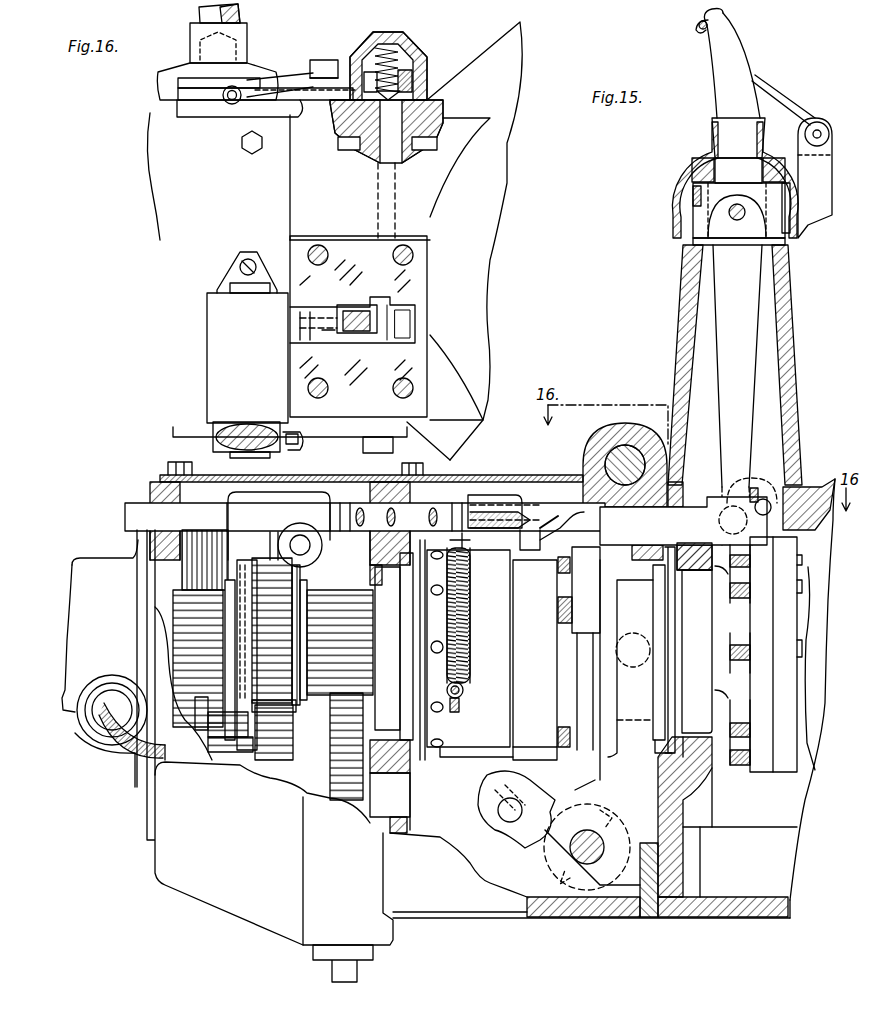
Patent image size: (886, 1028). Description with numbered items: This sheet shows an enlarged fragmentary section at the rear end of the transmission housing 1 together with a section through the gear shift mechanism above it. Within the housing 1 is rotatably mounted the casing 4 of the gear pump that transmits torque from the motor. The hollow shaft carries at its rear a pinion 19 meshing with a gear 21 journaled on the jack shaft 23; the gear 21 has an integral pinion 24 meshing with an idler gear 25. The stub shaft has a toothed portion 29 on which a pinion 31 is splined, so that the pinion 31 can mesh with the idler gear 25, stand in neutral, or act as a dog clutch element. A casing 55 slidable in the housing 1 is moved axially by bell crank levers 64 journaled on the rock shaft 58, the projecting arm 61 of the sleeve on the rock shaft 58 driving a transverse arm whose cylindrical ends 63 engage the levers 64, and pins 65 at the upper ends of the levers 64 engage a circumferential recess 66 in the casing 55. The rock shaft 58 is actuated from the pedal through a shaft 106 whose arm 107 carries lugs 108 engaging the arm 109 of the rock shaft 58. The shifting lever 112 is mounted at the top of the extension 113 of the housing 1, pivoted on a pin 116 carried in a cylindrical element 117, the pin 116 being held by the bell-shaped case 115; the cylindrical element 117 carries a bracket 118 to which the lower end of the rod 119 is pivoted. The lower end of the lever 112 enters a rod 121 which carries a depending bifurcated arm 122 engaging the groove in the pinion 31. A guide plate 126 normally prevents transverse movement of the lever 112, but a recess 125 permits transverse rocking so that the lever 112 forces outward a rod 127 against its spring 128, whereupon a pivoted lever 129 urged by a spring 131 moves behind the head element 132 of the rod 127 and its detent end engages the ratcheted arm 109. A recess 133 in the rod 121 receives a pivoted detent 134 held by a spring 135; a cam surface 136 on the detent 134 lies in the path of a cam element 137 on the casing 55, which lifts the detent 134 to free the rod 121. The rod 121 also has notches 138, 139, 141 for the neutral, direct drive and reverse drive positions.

In FIG. 16, the housing 1 is at (180, 218).
In FIG. 15, the housing 1 is at (630, 900).
In FIG. 15, the casing 4 is at (778, 775).
In FIG. 15, the pinion 19 is at (345, 598).
In FIG. 15, the gear 21 is at (348, 790).
In FIG. 15, the jack shaft 23 is at (405, 797).
In FIG. 15, the pinion 24 is at (232, 756).
In FIG. 15, the idler gear 25 is at (213, 725).
In FIG. 15, the toothed portion 29 is at (196, 600).
In FIG. 15, the pinion 31 is at (275, 760).
In FIG. 15, the casing 55 is at (542, 740).
In FIG. 16, the rock shaft 58 is at (240, 48).
In FIG. 15, the rock shaft 58 is at (592, 860).
In FIG. 15, the projecting arm 61 is at (553, 795).
In FIG. 15, the cylindrical ends 63 is at (508, 822).
In FIG. 15, the bell crank levers 64 is at (486, 805).
In FIG. 15, the pins 65 is at (631, 648).
In FIG. 15, the circumferential recess 66 is at (640, 592).
In FIG. 16, the shaft 106 is at (240, 12).
In FIG. 16, the arm 107 is at (160, 72).
In FIG. 16, the lugs 108 is at (178, 95).
In FIG. 16, the arm 109 is at (180, 83).
In FIG. 16, the shifting lever 112 is at (350, 310).
In FIG. 15, the shifting lever 112 is at (740, 38).
In FIG. 15, the extension 113 is at (684, 302).
In FIG. 15, the bell-shaped case 115 is at (676, 182).
In FIG. 15, the pin 116 is at (735, 222).
In FIG. 15, the cylindrical element 117 is at (694, 241).
In FIG. 15, the bracket 118 is at (812, 232).
In FIG. 15, the rod 119 is at (780, 92).
In FIG. 16, the rod 121 is at (345, 340).
In FIG. 15, the rod 121 is at (140, 505).
In FIG. 15, the bifurcated arm 122 is at (292, 520).
In FIG. 16, the recess 125 is at (398, 302).
In FIG. 15, the recess 125 is at (770, 487).
In FIG. 16, the guide plate 126 is at (429, 246).
In FIG. 16, the rod 127 is at (384, 158).
In FIG. 15, the rod 127 is at (790, 528).
In FIG. 16, the spring 128 is at (404, 48).
In FIG. 16, the pivoted lever 129 is at (190, 102).
In FIG. 16, the spring 131 is at (230, 105).
In FIG. 16, the head element 132 is at (418, 86).
In FIG. 15, the recess 133 is at (565, 478).
In FIG. 15, the pivoted detent 134 is at (488, 503).
In FIG. 15, the spring 135 is at (470, 630).
In FIG. 15, the cam surface 136 is at (520, 540).
In FIG. 15, the cam element 137 is at (563, 528).
In FIG. 15, the notch 138 is at (350, 507).
In FIG. 15, the notch 139 is at (376, 530).
In FIG. 15, the notch 141 is at (436, 510).